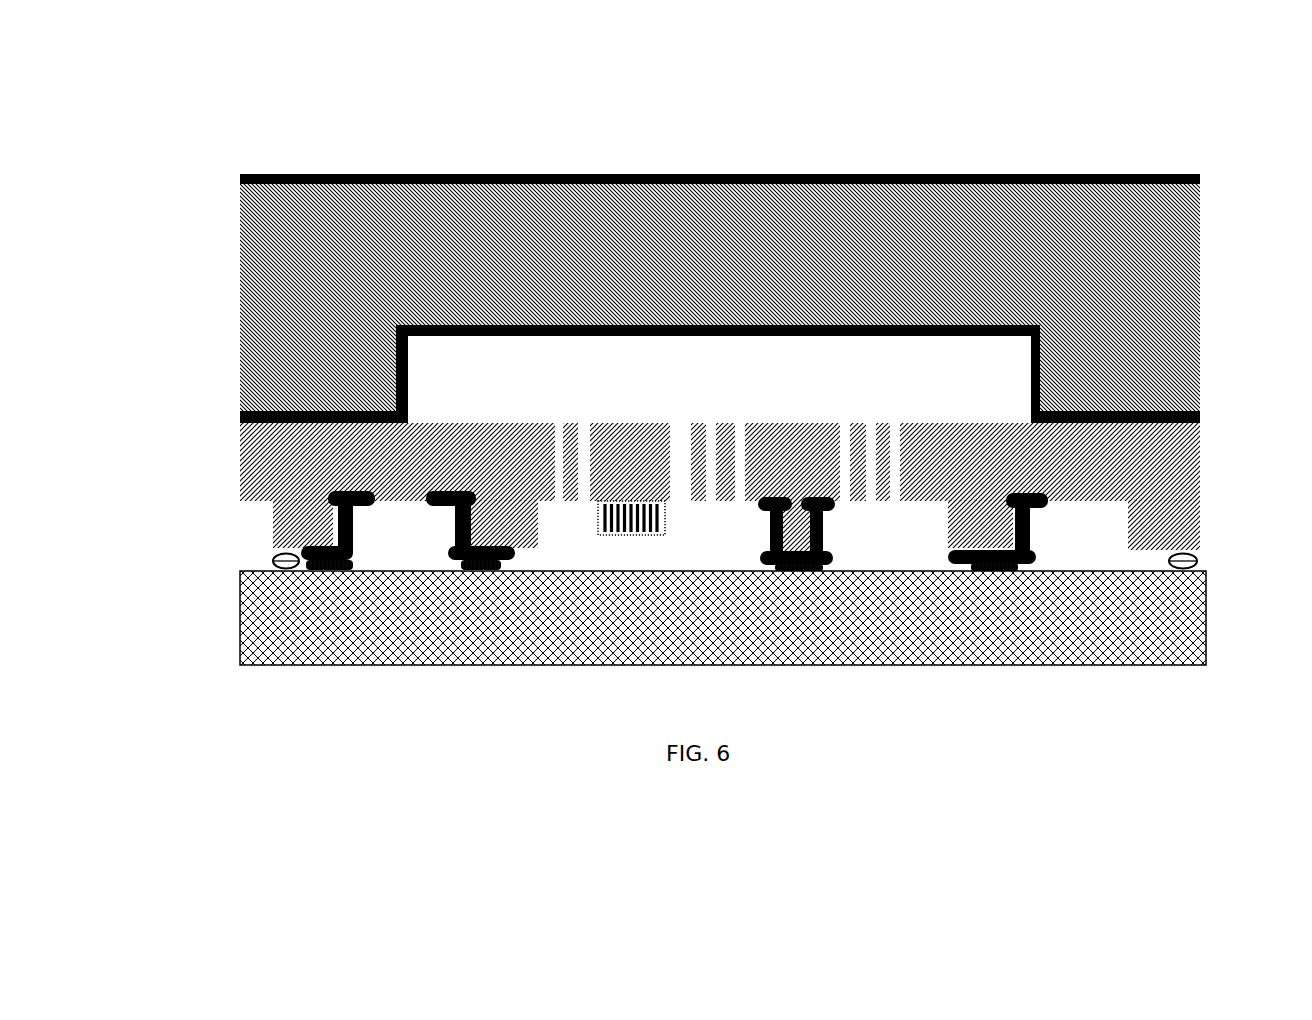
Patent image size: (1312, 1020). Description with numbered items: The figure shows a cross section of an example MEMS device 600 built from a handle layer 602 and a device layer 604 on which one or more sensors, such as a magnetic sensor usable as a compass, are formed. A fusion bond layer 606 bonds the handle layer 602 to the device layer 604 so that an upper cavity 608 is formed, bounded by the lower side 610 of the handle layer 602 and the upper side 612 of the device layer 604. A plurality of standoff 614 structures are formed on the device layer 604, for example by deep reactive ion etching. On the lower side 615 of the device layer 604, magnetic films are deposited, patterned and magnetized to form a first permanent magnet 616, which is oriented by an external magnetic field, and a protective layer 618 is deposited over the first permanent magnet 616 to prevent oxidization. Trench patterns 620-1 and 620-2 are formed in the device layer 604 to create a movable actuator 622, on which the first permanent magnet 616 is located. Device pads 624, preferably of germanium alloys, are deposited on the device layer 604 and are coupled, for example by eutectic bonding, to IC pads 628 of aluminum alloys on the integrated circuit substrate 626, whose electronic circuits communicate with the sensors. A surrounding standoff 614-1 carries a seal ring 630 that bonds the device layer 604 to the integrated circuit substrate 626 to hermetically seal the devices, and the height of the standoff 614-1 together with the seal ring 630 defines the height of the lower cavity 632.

The MEMS device 600 is at (547, 122).
The handle layer 602 is at (270, 278).
The device layer 604 is at (255, 458).
The fusion bond layer 606 is at (245, 405).
The upper cavity 608 is at (452, 370).
The lower side of the handle layer 610 is at (803, 328).
The upper side of the device layer 612 is at (988, 413).
The standoff 614 is at (490, 507).
The standoff 614-1 is at (280, 522).
The lower side of the device layer 615 is at (663, 493).
The first permanent magnet 616 is at (650, 515).
The protective layer 618 is at (590, 527).
The trench pattern 620-1 is at (577, 425).
The trench pattern 620-2 is at (677, 425).
The actuator 622 is at (636, 430).
The device pads 624 is at (347, 520).
The integrated circuit substrate 626 is at (255, 628).
The IC pads 628 is at (450, 555).
The seal ring 630 is at (268, 549).
The lower cavity 632 is at (615, 545).